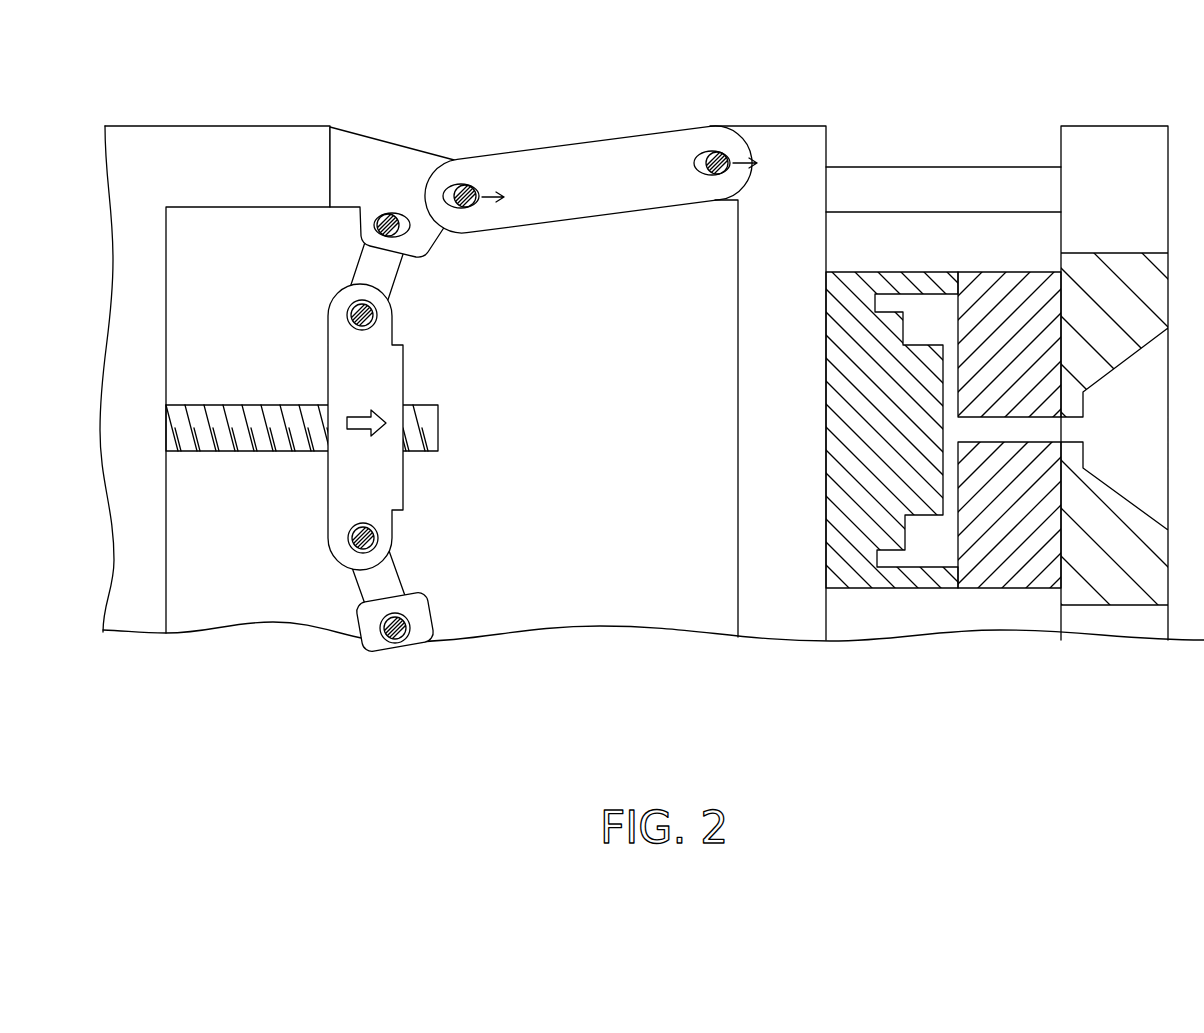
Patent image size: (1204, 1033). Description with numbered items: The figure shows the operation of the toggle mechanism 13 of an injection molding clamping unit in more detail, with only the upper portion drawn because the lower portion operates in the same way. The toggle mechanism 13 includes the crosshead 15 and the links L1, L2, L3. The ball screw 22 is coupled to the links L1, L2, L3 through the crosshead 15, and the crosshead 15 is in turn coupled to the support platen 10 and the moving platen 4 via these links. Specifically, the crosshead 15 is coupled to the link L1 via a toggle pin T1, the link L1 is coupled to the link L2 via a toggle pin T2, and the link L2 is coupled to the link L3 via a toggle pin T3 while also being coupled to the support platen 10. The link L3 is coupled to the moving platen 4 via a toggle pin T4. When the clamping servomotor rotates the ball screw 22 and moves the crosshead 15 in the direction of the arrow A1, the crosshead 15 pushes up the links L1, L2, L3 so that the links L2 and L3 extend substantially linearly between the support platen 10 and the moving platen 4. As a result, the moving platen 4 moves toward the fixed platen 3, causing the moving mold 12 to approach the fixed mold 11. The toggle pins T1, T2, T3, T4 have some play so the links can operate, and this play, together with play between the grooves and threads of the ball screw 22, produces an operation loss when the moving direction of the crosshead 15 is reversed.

The fixed platen 3 is at (1120, 145).
The moving platen 4 is at (788, 148).
The support platen 10 is at (302, 140).
The fixed mold 11 is at (1012, 308).
The moving mold 12 is at (850, 297).
The toggle mechanism 13 is at (592, 653).
The crosshead 15 is at (382, 485).
The ball screw 22 is at (437, 422).
The arrow A1 is at (362, 412).
The link L1 is at (390, 275).
The link L2 is at (387, 152).
The link L3 is at (578, 160).
The toggle pin T1 is at (378, 315).
The toggle pin T2 is at (373, 226).
The toggle pin T3 is at (462, 184).
The toggle pin T4 is at (717, 151).